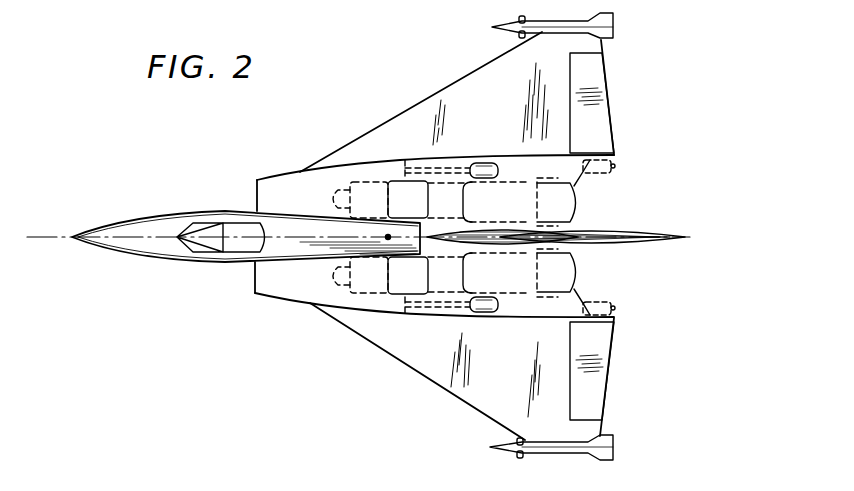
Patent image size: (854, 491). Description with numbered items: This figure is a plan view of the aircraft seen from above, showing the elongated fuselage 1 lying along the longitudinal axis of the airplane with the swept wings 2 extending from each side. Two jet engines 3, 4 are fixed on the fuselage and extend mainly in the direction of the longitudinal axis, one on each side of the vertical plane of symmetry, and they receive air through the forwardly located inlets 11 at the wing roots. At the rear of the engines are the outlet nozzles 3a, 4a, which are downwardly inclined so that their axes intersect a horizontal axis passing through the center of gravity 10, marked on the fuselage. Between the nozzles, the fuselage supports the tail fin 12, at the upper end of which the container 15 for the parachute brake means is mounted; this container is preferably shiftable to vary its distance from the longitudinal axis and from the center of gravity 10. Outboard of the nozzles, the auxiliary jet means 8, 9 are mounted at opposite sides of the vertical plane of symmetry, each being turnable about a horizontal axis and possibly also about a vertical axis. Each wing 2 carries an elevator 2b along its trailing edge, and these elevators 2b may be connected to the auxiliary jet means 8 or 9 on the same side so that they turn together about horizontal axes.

The fuselage 1 is at (141, 226).
The wing 2 is at (557, 113).
The elevator 2b is at (601, 77).
The jet engine 3 is at (394, 185).
The jet engine 4 is at (362, 297).
The outlet nozzle 3a is at (577, 199).
The outlet nozzle 4a is at (577, 276).
The auxiliary jet means 8 is at (615, 167).
The auxiliary jet means 9 is at (615, 308).
The center of gravity 10 is at (388, 237).
The inlet 11 is at (257, 198).
The tail fin 12 is at (500, 236).
The container 15 is at (598, 225).